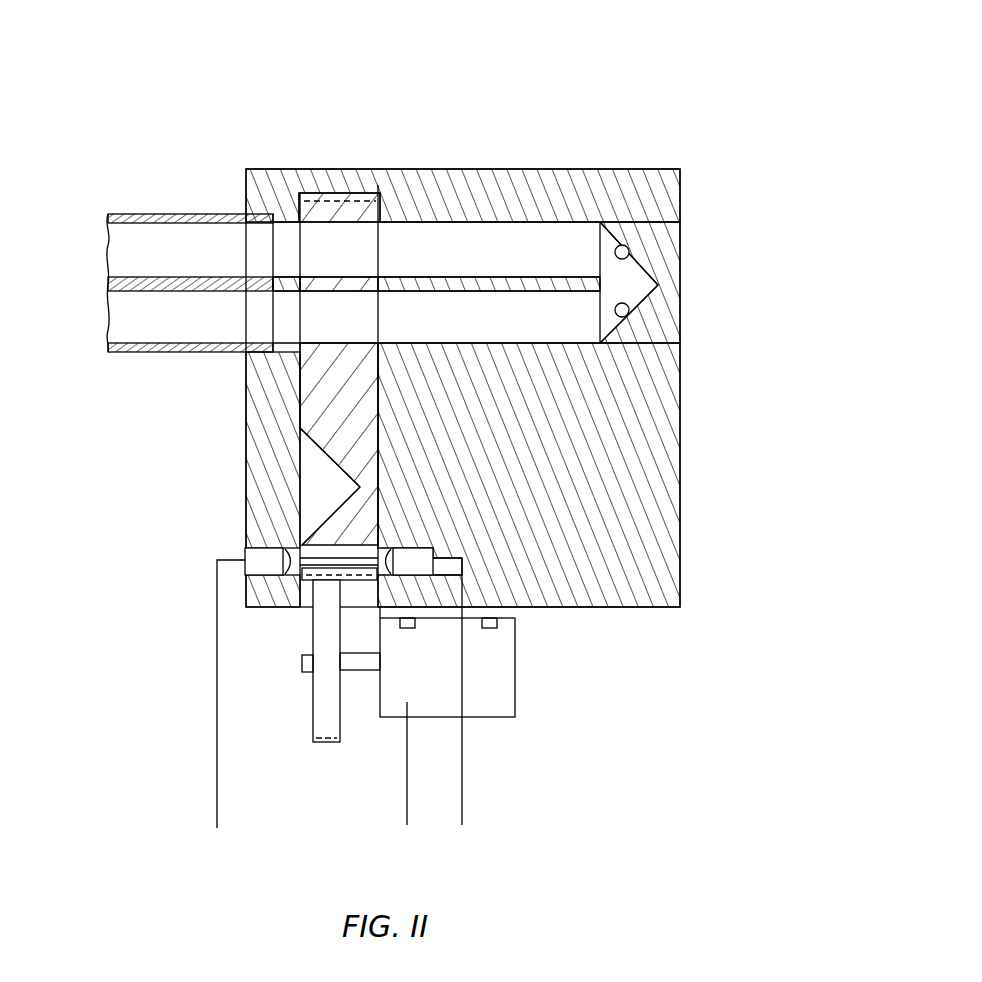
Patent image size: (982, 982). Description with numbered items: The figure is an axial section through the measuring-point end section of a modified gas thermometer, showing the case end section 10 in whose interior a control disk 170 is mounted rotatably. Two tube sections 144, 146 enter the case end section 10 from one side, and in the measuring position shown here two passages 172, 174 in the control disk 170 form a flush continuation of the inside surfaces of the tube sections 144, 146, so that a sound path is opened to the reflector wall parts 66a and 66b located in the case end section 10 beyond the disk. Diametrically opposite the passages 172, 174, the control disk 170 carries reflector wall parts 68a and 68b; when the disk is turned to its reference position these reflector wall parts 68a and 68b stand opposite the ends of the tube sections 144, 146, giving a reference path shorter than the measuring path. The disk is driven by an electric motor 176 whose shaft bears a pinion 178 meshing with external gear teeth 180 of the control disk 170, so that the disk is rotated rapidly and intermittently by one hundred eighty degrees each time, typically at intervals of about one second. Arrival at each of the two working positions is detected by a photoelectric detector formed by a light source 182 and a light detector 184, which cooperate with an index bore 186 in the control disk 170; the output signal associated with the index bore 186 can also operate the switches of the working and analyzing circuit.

The case end section 10 is at (482, 128).
The tube section 144 is at (172, 214).
The tube section 146 is at (180, 322).
The passage 172 is at (357, 223).
The passage 174 is at (357, 291).
The reflector wall part 66a is at (624, 248).
The reflector wall part 66b is at (627, 306).
The control disk 170 is at (378, 186).
The external gear teeth 180 is at (313, 172).
The reflector wall part 68a is at (300, 455).
The reflector wall part 68b is at (325, 508).
The light source 182 is at (250, 565).
The light detector 184 is at (420, 563).
The index bore 186 is at (300, 582).
The pinion 178 is at (323, 745).
The electric motor 176 is at (498, 683).